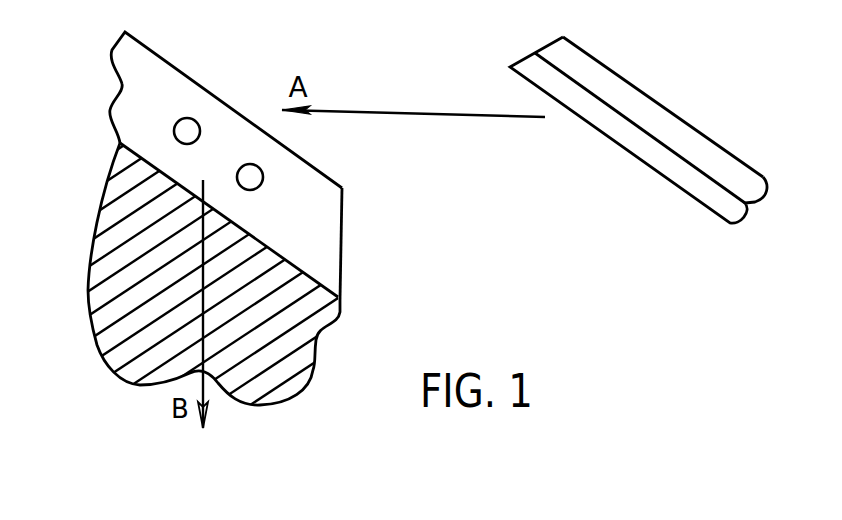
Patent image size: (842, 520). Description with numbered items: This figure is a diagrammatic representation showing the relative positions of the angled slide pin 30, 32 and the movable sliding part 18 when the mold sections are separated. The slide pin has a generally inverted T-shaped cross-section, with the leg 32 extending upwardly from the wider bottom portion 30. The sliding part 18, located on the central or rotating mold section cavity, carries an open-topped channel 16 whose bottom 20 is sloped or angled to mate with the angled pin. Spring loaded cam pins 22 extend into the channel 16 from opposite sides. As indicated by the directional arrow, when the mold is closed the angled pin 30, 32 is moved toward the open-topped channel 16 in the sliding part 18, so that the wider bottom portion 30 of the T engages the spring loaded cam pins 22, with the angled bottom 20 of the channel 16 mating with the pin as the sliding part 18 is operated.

The channel 16 is at (138, 110).
The sliding part 18 is at (118, 363).
The angled bottom 20 is at (313, 277).
The spring loaded cam pins 22 is at (250, 172).
The wider bottom portion of the slide pin 30 is at (613, 135).
The leg of the slide pin 32 is at (648, 110).